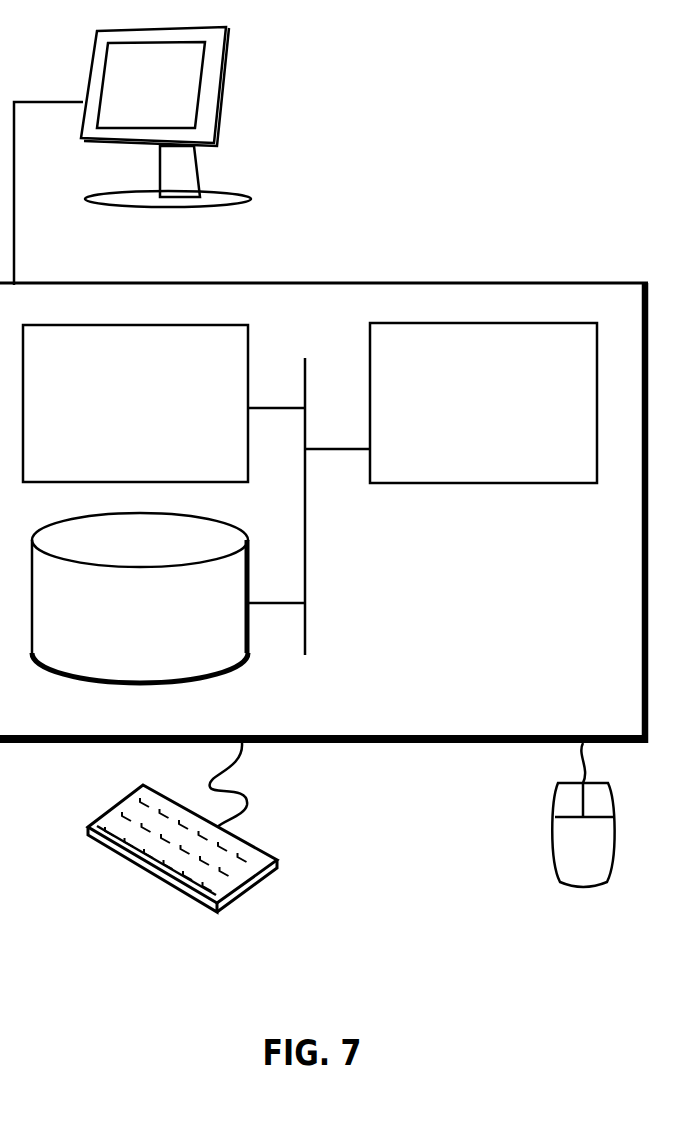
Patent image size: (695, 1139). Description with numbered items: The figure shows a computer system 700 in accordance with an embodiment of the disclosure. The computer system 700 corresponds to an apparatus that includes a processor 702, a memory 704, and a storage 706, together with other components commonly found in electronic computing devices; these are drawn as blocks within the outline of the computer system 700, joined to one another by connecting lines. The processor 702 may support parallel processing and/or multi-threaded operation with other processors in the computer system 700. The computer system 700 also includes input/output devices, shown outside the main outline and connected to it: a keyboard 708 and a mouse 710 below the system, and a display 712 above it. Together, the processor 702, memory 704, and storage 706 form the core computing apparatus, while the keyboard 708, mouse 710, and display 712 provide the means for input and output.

The computer system 700 is at (360, 260).
The processor 702 is at (483, 403).
The memory 704 is at (135, 403).
The storage device / database 706 is at (140, 598).
The keyboard 708 is at (105, 847).
The mouse 710 is at (583, 815).
The display monitor 712 is at (132, 156).